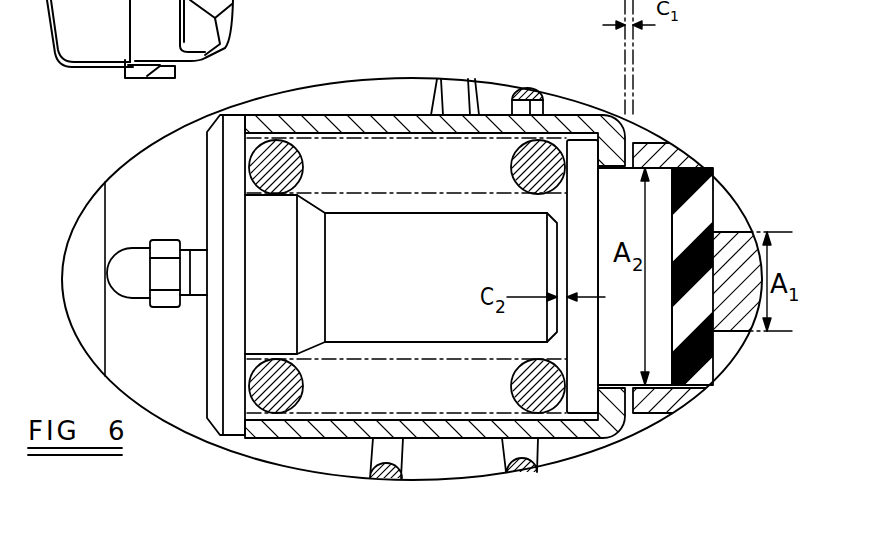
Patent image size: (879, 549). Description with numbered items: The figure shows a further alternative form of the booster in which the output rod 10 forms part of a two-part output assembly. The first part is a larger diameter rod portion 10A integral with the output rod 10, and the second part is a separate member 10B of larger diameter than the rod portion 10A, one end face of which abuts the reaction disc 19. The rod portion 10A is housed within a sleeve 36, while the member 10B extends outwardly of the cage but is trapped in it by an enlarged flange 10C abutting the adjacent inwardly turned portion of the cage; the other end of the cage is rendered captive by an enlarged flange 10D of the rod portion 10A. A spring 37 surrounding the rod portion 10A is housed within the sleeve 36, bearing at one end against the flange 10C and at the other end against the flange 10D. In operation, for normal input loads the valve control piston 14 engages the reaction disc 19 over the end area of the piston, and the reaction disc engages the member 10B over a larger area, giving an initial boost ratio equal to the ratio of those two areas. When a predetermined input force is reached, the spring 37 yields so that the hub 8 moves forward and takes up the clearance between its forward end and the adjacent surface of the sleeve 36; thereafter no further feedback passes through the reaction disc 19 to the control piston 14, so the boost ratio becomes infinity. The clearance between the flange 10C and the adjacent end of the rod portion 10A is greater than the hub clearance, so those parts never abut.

The sleeve 36 is at (390, 117).
The rod portion 10A is at (439, 227).
The spring 37 is at (528, 88).
The enlarged flange 10C is at (578, 140).
The hub 8 is at (628, 120).
The separate member 10B is at (661, 185).
The reaction disc 19 is at (703, 195).
The valve control piston 14 is at (740, 247).
The enlarged flange 10D is at (230, 193).
The output rod 10 is at (197, 289).